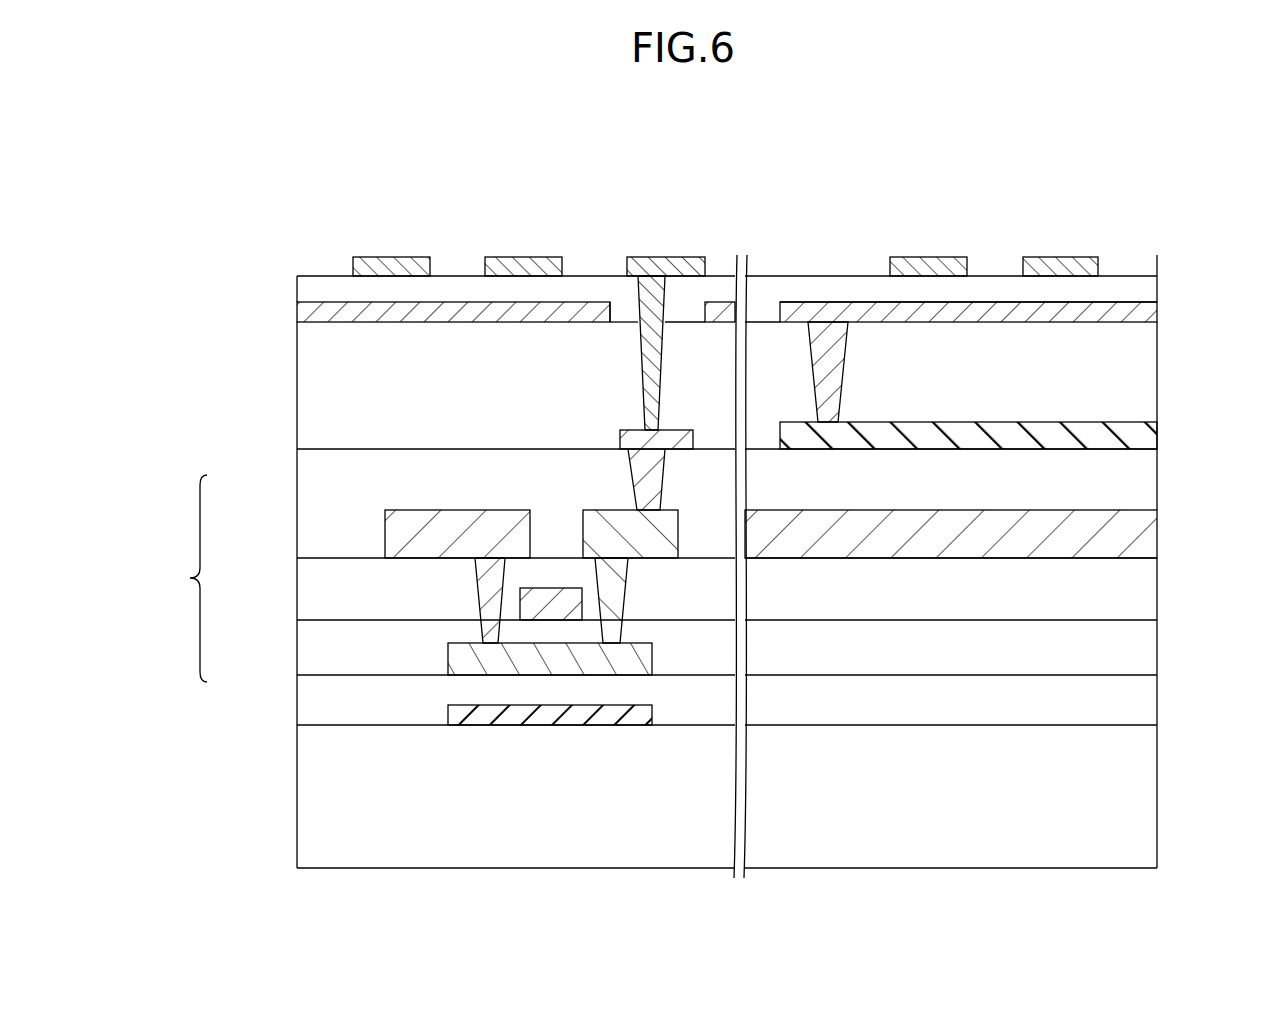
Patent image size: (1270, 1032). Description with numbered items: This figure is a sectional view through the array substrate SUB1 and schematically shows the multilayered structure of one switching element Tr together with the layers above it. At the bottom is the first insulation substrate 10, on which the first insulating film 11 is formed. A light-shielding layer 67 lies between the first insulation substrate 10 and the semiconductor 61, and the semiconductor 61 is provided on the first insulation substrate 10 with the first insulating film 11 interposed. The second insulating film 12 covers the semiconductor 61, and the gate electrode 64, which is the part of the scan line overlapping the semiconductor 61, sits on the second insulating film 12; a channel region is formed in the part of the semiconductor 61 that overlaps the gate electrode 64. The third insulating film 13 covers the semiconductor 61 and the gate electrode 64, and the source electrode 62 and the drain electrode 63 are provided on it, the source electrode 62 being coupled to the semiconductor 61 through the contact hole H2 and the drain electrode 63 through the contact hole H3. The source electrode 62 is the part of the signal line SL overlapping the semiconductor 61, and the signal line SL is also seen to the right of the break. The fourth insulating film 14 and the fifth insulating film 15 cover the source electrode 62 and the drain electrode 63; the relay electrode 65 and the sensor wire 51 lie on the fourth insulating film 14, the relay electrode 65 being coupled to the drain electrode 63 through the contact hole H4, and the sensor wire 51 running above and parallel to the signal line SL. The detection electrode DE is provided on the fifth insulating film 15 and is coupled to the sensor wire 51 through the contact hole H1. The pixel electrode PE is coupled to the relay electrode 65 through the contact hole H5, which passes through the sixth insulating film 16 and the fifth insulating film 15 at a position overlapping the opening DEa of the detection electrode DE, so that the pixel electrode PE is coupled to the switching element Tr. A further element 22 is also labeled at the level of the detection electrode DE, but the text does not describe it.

The substrate / array substrate SUB1 is at (1138, 187).
The first insulation substrate 10 is at (1143, 795).
The first insulating film 11 is at (1143, 695).
The second insulating film 12 is at (1143, 648).
The third insulating film 13 is at (1143, 588).
The fourth insulating film 14 is at (1143, 476).
The fifth insulating film 15 is at (1143, 385).
The sixth insulating film 16 is at (1143, 282).
The common electrode wiring 22 is at (997, 300).
The sensor wire 51 is at (1145, 435).
The semiconductor 61 is at (448, 657).
The source electrode 62 is at (385, 527).
The drain electrode 63 is at (585, 510).
The gate electrode 64 is at (528, 588).
The relay electrode 65 is at (622, 432).
The light-shielding layer 67 is at (533, 725).
The detection electrode DE is at (331, 300).
The opening of the detection electrode DEa is at (618, 300).
The pixel electrode PE is at (391, 257).
The signal line SL is at (1145, 530).
The switching element Tr is at (185, 578).
The contact hole H1 is at (817, 350).
The contact hole H2 is at (480, 582).
The contact hole H3 is at (597, 582).
The contact hole H4 is at (636, 478).
The contact hole H5 is at (659, 290).